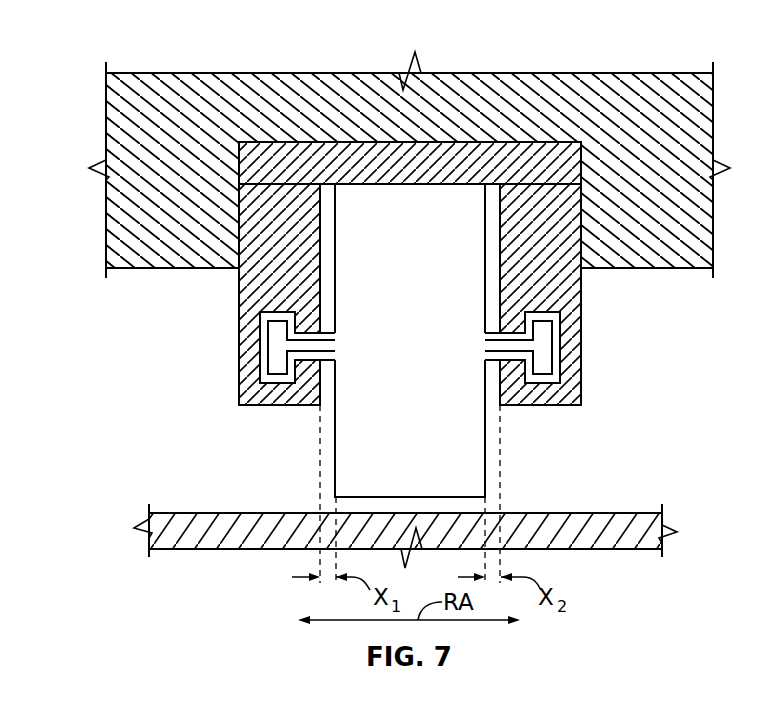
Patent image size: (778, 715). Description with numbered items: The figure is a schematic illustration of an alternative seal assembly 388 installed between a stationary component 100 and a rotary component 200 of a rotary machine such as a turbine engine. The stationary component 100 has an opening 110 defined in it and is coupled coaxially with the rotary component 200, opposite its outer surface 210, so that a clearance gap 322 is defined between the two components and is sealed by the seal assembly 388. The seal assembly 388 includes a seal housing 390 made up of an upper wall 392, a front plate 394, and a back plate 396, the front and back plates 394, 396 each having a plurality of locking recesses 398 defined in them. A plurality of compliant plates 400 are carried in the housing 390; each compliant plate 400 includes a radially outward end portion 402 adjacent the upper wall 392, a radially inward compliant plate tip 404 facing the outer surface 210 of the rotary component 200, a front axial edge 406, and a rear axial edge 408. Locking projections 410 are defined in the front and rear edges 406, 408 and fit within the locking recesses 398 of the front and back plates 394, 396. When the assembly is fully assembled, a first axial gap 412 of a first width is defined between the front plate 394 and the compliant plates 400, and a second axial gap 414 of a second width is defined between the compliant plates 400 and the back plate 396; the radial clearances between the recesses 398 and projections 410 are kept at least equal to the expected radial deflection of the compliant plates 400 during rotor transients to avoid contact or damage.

The seal assembly 388 is at (128, 52).
The opening 110 is at (536, 142).
The stationary component 100 is at (434, 128).
The upper wall 392 is at (432, 173).
The front plate 394 is at (304, 245).
The back plate 396 is at (564, 243).
The radially outward end portion 402 is at (391, 187).
The front axial edge 406 is at (336, 264).
The rear axial edge 408 is at (485, 236).
The compliant plates 400 is at (434, 353).
The seal housing 390 is at (428, 259).
The locking projections 410 is at (283, 345).
The locking recesses 398 is at (263, 361).
The first axial gap 412 is at (330, 404).
The second axial gap 414 is at (489, 402).
The radially inward compliant plate tip 404 is at (409, 496).
The clearance gap 322 is at (479, 508).
The outer surface 210 is at (589, 512).
The rotary component 200 is at (431, 525).